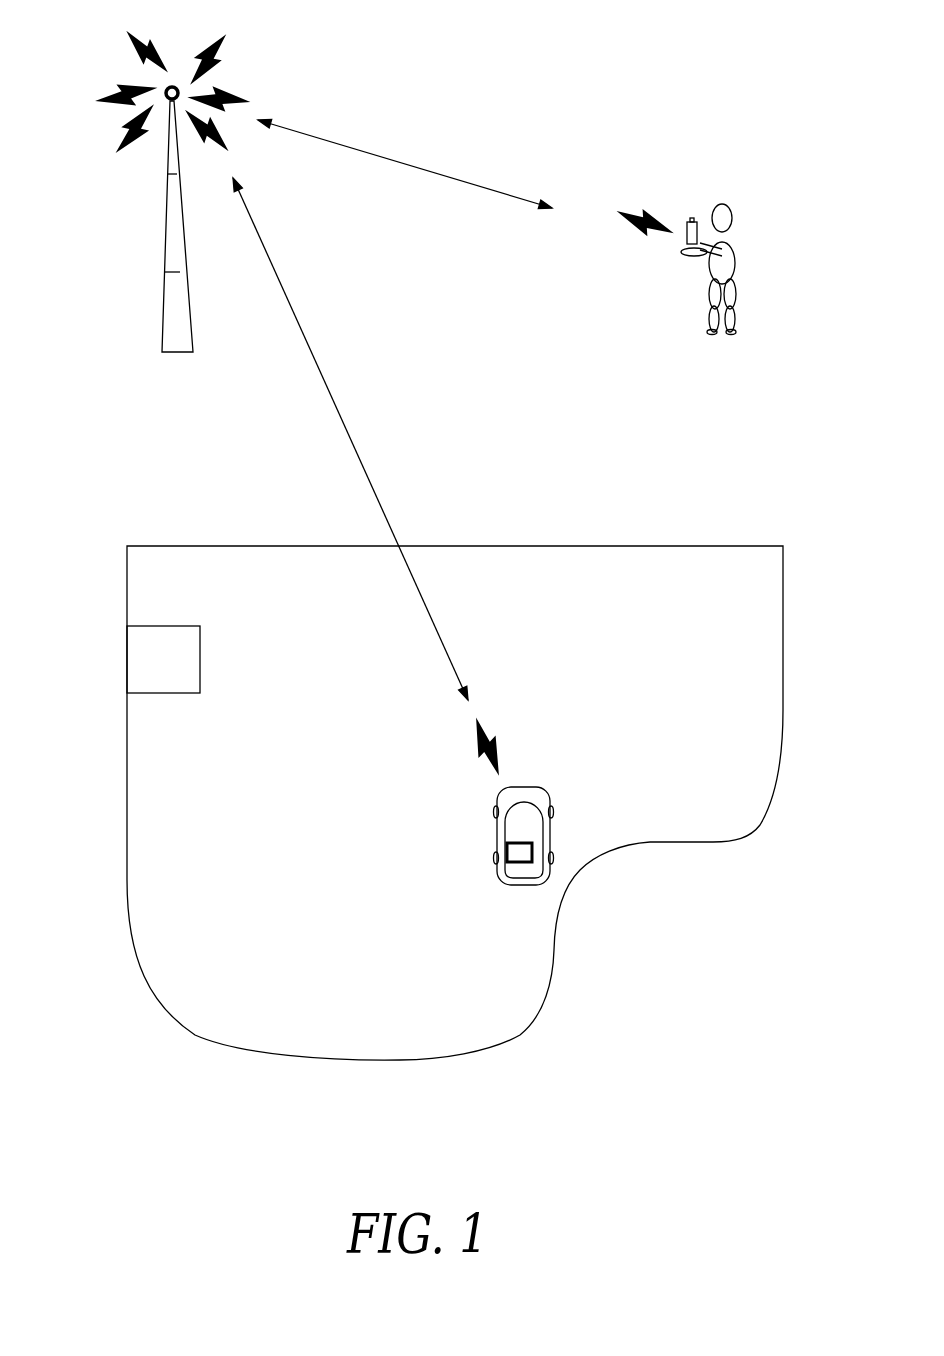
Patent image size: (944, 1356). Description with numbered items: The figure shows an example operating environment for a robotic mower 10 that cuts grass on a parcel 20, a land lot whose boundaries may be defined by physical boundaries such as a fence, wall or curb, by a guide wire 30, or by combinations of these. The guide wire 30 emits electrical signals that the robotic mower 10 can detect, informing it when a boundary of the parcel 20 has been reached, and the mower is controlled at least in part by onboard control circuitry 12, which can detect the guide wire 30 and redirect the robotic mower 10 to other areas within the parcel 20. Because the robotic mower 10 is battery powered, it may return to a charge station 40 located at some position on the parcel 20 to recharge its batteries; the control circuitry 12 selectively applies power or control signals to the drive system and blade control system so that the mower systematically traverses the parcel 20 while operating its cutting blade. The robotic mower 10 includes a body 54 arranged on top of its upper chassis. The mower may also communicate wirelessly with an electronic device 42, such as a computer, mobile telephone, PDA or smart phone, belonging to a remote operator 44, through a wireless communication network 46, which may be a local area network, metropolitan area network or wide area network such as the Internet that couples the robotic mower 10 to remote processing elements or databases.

The robotic mower 10 is at (487, 798).
The control circuitry 12 is at (527, 843).
The parcel 20 is at (308, 904).
The guide wire 30 is at (553, 962).
The charge station 40 is at (140, 646).
The electronic device 42 is at (692, 210).
The remote operator 44 is at (732, 229).
The wireless communication network 46 is at (430, 183).
The body 54 is at (521, 786).